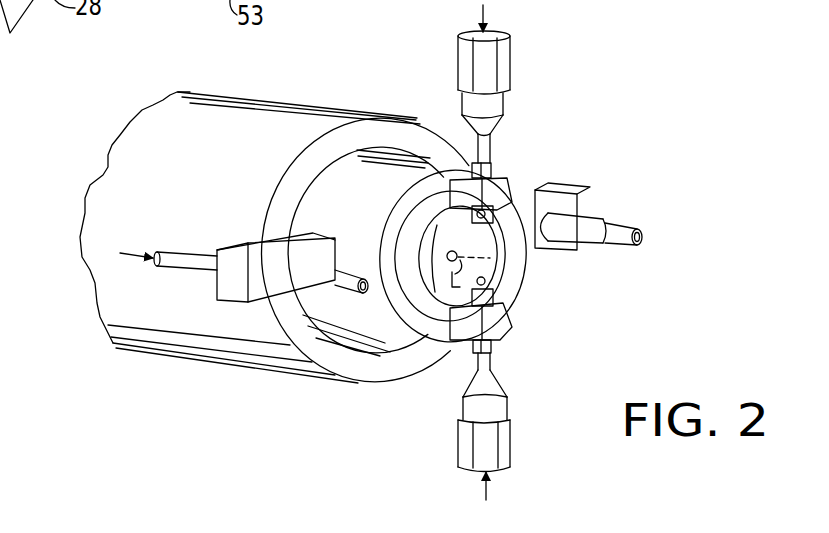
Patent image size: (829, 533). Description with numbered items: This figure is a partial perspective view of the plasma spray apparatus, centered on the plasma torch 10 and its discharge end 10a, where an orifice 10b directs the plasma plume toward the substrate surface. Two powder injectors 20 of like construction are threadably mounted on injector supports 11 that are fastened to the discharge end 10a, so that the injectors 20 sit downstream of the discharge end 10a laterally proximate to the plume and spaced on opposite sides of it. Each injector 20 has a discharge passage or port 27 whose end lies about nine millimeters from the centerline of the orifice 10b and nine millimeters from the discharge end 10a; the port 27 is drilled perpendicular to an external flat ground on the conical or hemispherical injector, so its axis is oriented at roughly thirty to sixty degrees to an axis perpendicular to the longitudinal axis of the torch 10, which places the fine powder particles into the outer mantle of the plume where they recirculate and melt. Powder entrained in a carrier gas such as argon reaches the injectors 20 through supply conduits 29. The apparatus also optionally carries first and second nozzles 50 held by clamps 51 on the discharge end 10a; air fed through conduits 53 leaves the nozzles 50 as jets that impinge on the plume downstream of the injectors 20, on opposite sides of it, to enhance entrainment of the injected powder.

The plasma torch 10 is at (120, 335).
The discharge end 10a is at (407, 340).
The orifice 10b is at (430, 195).
The injector support 11 is at (512, 176).
The powder injector 20 is at (507, 166).
The discharge passage or port 27 is at (500, 190).
The supply conduit 29 is at (504, 36).
The nozzle 50 is at (357, 291).
The clamp 51 is at (237, 312).
The conduit 53 is at (158, 268).